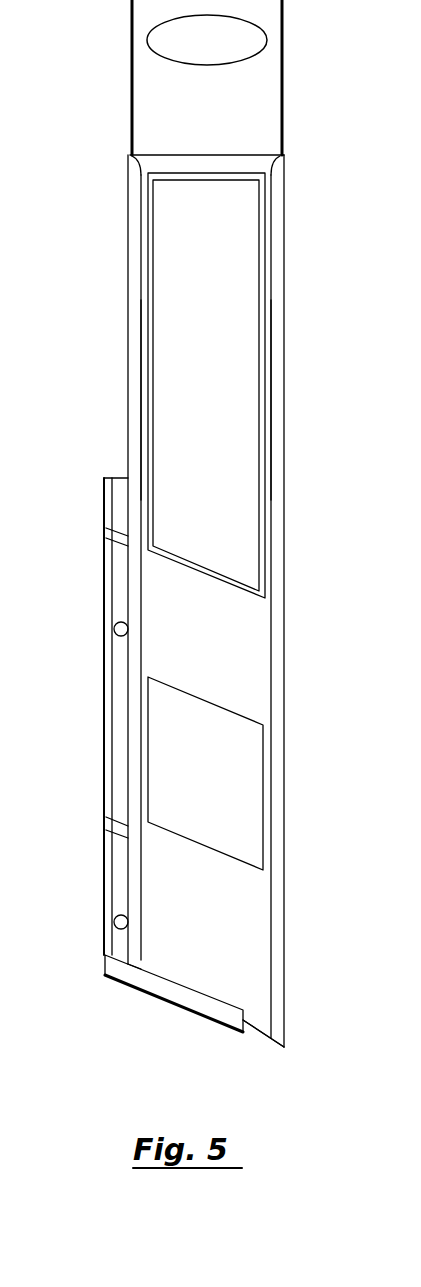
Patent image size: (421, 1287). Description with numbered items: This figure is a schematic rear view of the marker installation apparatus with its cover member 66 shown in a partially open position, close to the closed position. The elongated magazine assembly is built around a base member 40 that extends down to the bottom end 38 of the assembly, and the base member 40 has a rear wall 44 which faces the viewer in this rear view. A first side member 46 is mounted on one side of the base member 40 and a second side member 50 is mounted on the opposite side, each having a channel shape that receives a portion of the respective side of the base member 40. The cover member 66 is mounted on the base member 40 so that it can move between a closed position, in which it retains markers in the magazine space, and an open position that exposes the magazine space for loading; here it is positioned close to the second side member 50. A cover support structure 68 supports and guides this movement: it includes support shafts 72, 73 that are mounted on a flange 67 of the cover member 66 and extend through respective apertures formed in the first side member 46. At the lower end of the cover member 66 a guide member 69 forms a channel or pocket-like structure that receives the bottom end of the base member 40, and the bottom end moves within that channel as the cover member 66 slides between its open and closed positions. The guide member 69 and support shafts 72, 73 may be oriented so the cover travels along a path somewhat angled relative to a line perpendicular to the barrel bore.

The bottom end 38 is at (258, 1035).
The base member 40 is at (235, 635).
The rear wall 44 is at (241, 930).
The first side member 46 is at (132, 428).
The second side member 50 is at (276, 480).
The cover member 66 is at (104, 688).
The flange 67 is at (104, 757).
The cover support structure 68 is at (66, 716).
The guide member 69 is at (175, 992).
The support shaft 72 is at (96, 807).
The support shaft 73 is at (116, 546).